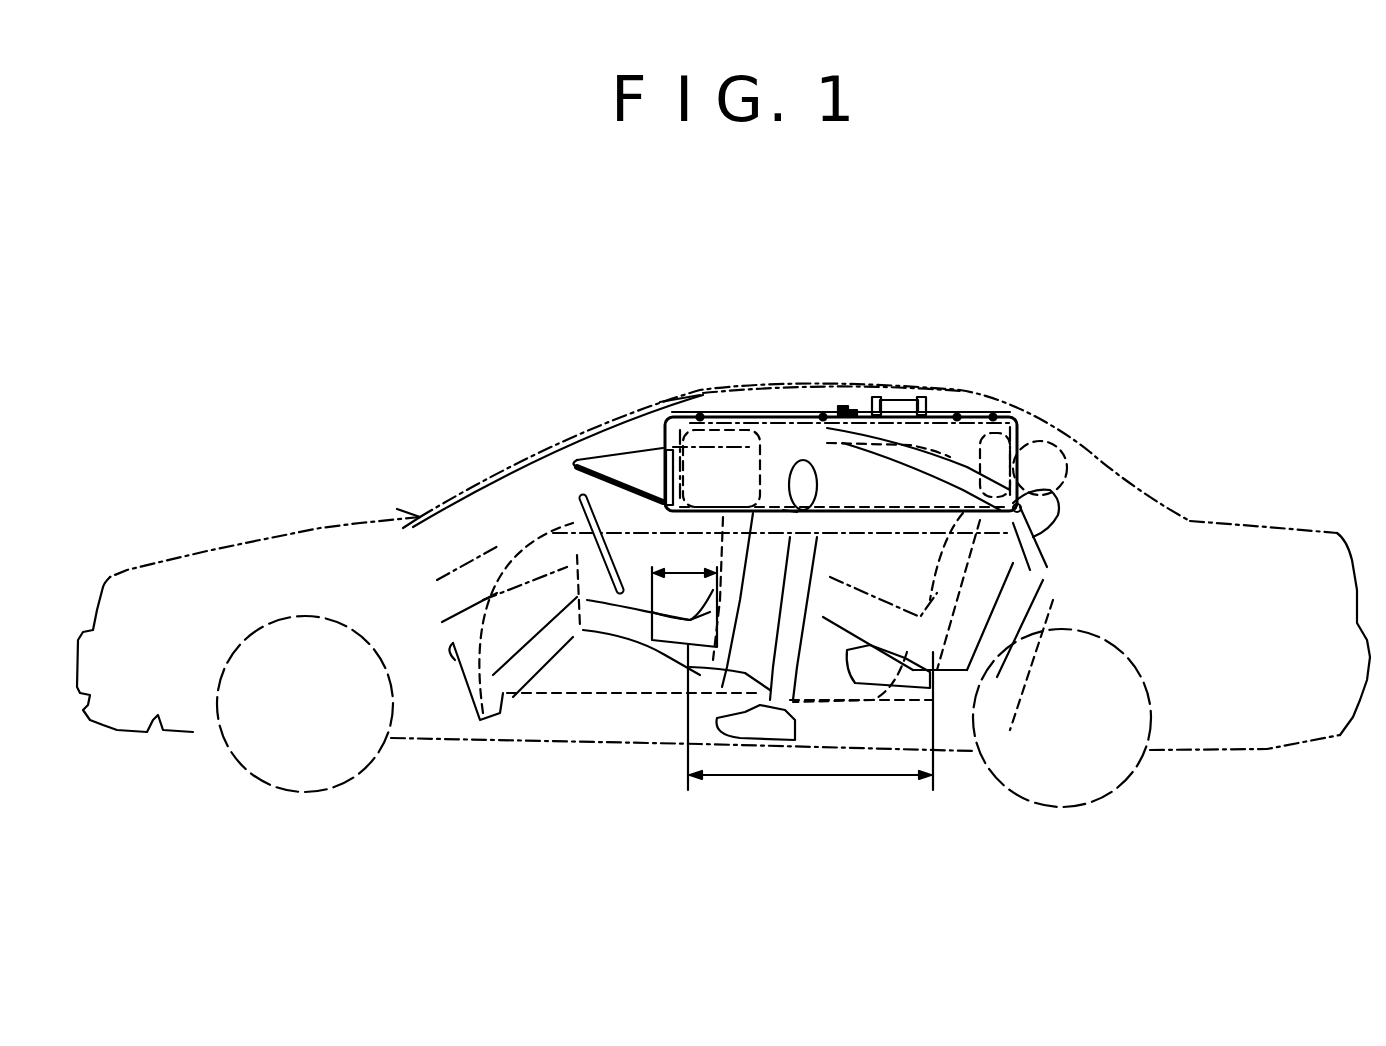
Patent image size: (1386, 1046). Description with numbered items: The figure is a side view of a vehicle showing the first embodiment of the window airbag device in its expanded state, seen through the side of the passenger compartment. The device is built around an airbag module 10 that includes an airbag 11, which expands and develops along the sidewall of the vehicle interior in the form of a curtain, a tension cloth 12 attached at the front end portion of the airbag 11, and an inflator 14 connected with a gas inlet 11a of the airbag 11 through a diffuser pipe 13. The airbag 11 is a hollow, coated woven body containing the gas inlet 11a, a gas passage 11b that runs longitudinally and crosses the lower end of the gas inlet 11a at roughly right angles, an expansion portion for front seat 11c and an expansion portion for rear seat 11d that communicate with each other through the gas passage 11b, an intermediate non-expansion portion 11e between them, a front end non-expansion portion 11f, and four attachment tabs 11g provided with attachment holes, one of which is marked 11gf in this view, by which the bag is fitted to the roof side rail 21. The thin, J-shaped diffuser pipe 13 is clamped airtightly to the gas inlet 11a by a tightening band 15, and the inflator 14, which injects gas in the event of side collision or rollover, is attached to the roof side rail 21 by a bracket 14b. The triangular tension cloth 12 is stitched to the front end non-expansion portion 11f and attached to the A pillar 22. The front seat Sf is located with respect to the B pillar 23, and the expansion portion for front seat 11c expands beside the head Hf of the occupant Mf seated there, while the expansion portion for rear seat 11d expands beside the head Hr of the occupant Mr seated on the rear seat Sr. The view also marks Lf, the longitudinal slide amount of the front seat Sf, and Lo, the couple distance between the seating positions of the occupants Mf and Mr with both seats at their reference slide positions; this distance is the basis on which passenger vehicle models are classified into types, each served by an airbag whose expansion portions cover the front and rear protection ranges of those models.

The airbag module 10 is at (795, 398).
The airbag 11 is at (888, 513).
The gas inlet 11a is at (825, 414).
The gas passage 11b is at (1013, 508).
The expansion portion for front seat 11c is at (728, 445).
The expansion portion for rear seat 11d is at (990, 427).
The intermediate non-expansion portion 11e is at (1040, 535).
The front end non-expansion portion 11f is at (645, 455).
The attachment tabs 11g is at (699, 414).
The front header 11gf is at (665, 403).
The tension cloth 12 is at (557, 537).
The diffuser pipe 13 is at (848, 408).
The inflator 14 is at (893, 398).
The bracket 14b is at (928, 397).
The tightening band 15 is at (807, 403).
The roof side rail 21 is at (767, 402).
The A pillar 22 is at (682, 426).
The B pillar 23 is at (830, 455).
The head of front seat occupant Hf is at (673, 447).
The head of rear seat occupant Hr is at (1090, 450).
The front seat occupant Mf is at (550, 558).
The rear seat occupant Mr is at (1015, 567).
The front seat Sf is at (627, 677).
The rear seat Sr is at (953, 697).
The longitudinal slide amount of front seat Lf is at (684, 591).
The couple distance Lo is at (810, 734).